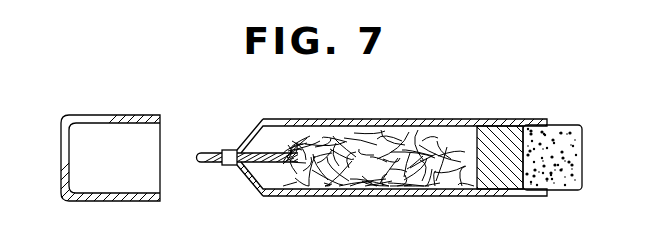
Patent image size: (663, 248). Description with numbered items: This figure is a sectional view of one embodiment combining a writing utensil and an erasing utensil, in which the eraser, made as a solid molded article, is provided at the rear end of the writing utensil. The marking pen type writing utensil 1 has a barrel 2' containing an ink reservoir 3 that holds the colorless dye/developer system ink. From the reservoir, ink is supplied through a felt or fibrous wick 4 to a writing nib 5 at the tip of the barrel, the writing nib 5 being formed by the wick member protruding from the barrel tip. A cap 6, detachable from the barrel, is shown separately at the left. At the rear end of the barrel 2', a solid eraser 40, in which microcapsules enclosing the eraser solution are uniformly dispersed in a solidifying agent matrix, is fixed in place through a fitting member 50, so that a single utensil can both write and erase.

The writing utensil 1 is at (333, 109).
The barrel 2' is at (429, 104).
The ink reservoir 3 is at (357, 186).
The felt or fibrous wick 4 is at (266, 162).
The writing nib 5 is at (204, 163).
The cap 6 is at (112, 116).
The solid eraser 40 is at (563, 192).
The fitting member 50 is at (513, 132).